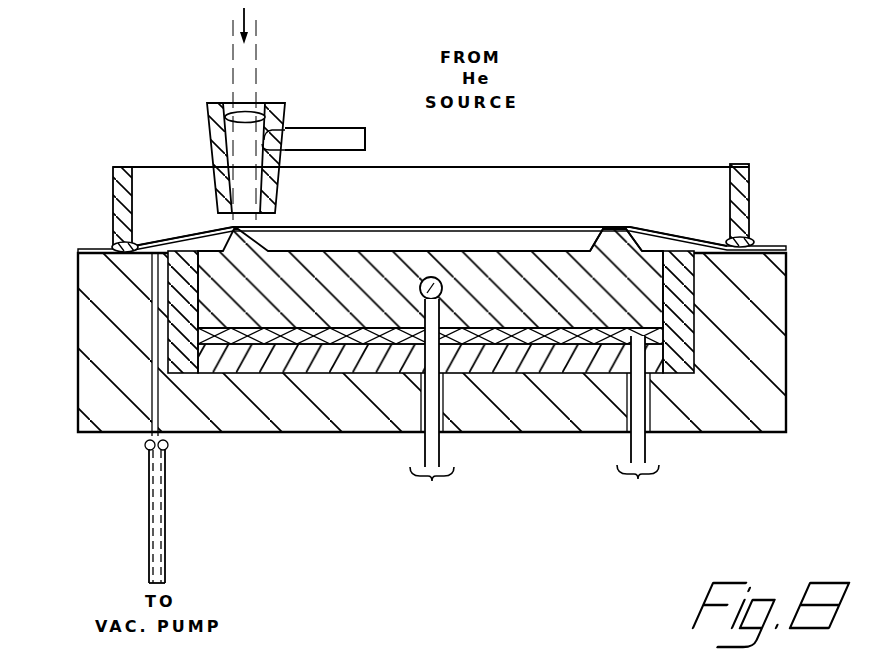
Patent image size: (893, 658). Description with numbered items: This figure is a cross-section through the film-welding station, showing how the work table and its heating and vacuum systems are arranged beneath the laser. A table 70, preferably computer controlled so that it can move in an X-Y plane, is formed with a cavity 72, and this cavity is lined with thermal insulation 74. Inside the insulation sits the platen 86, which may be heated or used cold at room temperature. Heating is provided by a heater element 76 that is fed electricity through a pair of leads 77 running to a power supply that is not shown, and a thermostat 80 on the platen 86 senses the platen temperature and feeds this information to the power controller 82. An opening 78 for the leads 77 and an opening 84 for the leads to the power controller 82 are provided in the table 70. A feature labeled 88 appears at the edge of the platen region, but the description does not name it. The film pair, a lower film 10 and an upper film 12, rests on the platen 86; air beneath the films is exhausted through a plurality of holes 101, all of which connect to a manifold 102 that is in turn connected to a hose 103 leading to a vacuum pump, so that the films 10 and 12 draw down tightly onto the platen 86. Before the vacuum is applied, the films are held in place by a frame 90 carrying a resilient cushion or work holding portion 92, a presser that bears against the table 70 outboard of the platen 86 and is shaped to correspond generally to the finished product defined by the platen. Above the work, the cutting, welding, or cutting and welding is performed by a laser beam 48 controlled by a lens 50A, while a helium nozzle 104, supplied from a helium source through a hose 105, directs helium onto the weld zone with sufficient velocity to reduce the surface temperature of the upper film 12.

The laser beam 48 is at (252, 57).
The lens 50A is at (248, 111).
The helium nozzle 104 is at (207, 127).
The hose 105 is at (350, 128).
The platen 86 is at (393, 262).
The film 10 is at (80, 252).
The upper film 12 is at (97, 250).
The raised rim of pedestal 88 is at (617, 235).
The frame 90 is at (114, 168).
The resilient cushion or work holding portion 92 is at (115, 243).
The table 70 is at (96, 343).
The cavity 72 is at (694, 302).
The thermal insulation 74 is at (285, 365).
The heater element 76 is at (527, 332).
The thermostat 80 is at (423, 302).
The power controller 82 is at (432, 406).
The opening 84 is at (420, 433).
The leads 77 is at (638, 423).
The opening 78 is at (656, 434).
The holes 101 is at (155, 388).
The manifold 102 is at (144, 447).
The hose 103 is at (152, 537).